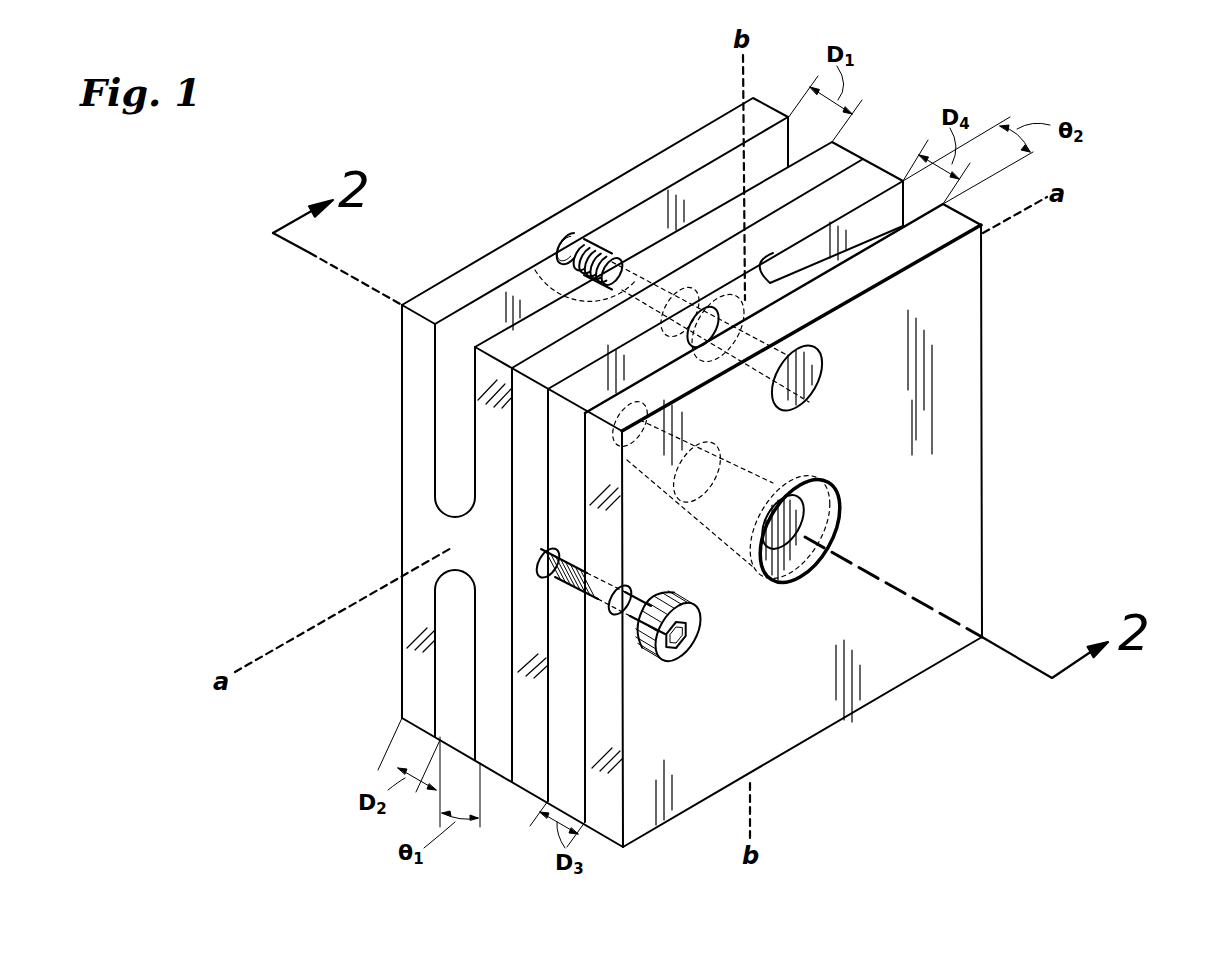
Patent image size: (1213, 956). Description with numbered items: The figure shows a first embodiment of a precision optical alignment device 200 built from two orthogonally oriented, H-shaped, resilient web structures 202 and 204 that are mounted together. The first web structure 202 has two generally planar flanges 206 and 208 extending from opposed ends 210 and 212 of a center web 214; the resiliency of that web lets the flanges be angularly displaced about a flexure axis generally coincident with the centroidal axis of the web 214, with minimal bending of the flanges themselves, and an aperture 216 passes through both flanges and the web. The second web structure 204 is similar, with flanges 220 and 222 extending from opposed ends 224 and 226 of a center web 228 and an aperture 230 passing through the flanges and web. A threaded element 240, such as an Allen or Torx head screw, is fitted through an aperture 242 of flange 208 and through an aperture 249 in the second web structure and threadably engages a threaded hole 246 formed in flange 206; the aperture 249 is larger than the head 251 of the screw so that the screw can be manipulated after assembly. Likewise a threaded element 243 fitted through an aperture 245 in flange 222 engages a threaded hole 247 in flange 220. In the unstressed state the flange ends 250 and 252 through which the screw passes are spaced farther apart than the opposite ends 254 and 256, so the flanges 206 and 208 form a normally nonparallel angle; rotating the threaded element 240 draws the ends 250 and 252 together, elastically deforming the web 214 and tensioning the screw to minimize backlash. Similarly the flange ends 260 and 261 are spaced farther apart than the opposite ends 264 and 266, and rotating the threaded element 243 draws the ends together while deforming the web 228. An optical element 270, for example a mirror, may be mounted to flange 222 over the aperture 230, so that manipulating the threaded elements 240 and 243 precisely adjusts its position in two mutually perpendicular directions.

The precision optical alignment device 200 is at (1108, 268).
The web structure 202 is at (771, 102).
The web structure 204 is at (873, 210).
The flange 206 is at (430, 383).
The flange 208 is at (493, 445).
The end of center web 210 is at (413, 535).
The end of center web 212 is at (493, 543).
The center web 214 is at (447, 542).
The aperture 216 is at (663, 433).
The flange 220 is at (535, 714).
The flange 222 is at (607, 697).
The end of center web 224 is at (733, 212).
The end of center web 226 is at (793, 318).
The center web 228 is at (750, 292).
The aperture 230 is at (807, 512).
The threaded element 240 is at (611, 250).
The aperture 242 is at (532, 265).
The threaded element 243 is at (700, 643).
The aperture 245 is at (647, 585).
The threaded hole 246 is at (567, 250).
The threaded hole 247 is at (564, 598).
The aperture 249 is at (808, 395).
The flange end 250 is at (480, 270).
The head 251 is at (697, 277).
The flange end 252 is at (720, 262).
The end 254 is at (404, 734).
The end 256 is at (495, 773).
The flange end 260 is at (600, 528).
The flange end 261 is at (607, 555).
The end 264 is at (877, 172).
The end 266 is at (962, 211).
The optical element 270 is at (802, 574).